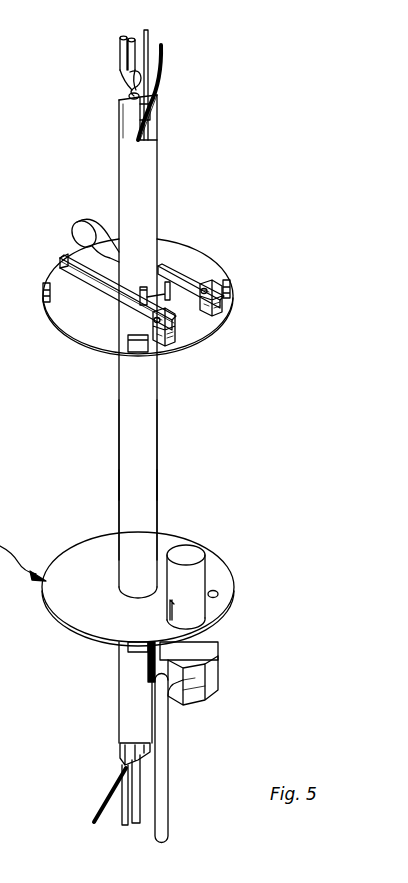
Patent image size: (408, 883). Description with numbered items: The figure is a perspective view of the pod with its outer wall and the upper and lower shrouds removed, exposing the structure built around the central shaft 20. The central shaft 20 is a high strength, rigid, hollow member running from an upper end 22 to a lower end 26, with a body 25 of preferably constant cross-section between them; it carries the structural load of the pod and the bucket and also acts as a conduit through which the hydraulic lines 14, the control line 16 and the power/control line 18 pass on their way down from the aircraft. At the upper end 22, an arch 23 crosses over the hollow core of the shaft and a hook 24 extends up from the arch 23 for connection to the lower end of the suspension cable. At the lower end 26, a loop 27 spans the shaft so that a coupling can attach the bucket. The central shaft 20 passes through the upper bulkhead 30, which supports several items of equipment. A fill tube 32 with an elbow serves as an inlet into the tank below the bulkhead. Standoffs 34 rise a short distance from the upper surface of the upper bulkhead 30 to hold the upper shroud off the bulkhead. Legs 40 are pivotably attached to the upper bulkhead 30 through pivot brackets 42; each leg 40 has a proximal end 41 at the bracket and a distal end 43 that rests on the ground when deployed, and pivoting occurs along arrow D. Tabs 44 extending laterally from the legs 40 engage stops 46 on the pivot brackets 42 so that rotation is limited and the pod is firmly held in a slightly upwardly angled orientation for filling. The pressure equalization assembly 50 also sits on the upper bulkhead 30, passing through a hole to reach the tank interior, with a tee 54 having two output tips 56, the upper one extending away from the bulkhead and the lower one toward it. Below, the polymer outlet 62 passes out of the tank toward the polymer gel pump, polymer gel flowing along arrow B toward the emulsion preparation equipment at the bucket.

The hydraulic lines 14 is at (121, 37).
The control line 16 is at (158, 68).
The power/control line 18 is at (148, 40).
The central shaft 20 is at (165, 471).
The upper end 22 is at (127, 158).
The arch 23 is at (124, 116).
The hook 24 is at (128, 72).
The body 25 is at (119, 458).
The lower end 26 is at (130, 710).
The loop 27 is at (124, 756).
The upper bulkhead 30 is at (196, 240).
The fill tube 32 is at (95, 226).
The standoffs 34 is at (229, 284).
The legs 40 is at (118, 292).
The proximal end 41 is at (136, 322).
The pivot brackets 42 is at (220, 300).
The distal ends 43 is at (61, 262).
The tabs 44 is at (204, 288).
The stops 46 is at (226, 312).
The pressure equalization assembly 50 is at (167, 303).
The tee 54 is at (160, 266).
The output tips 56 is at (146, 288).
The polymer outlet 62 is at (162, 805).
The arrow D is at (112, 256).
The arrow B is at (178, 722).